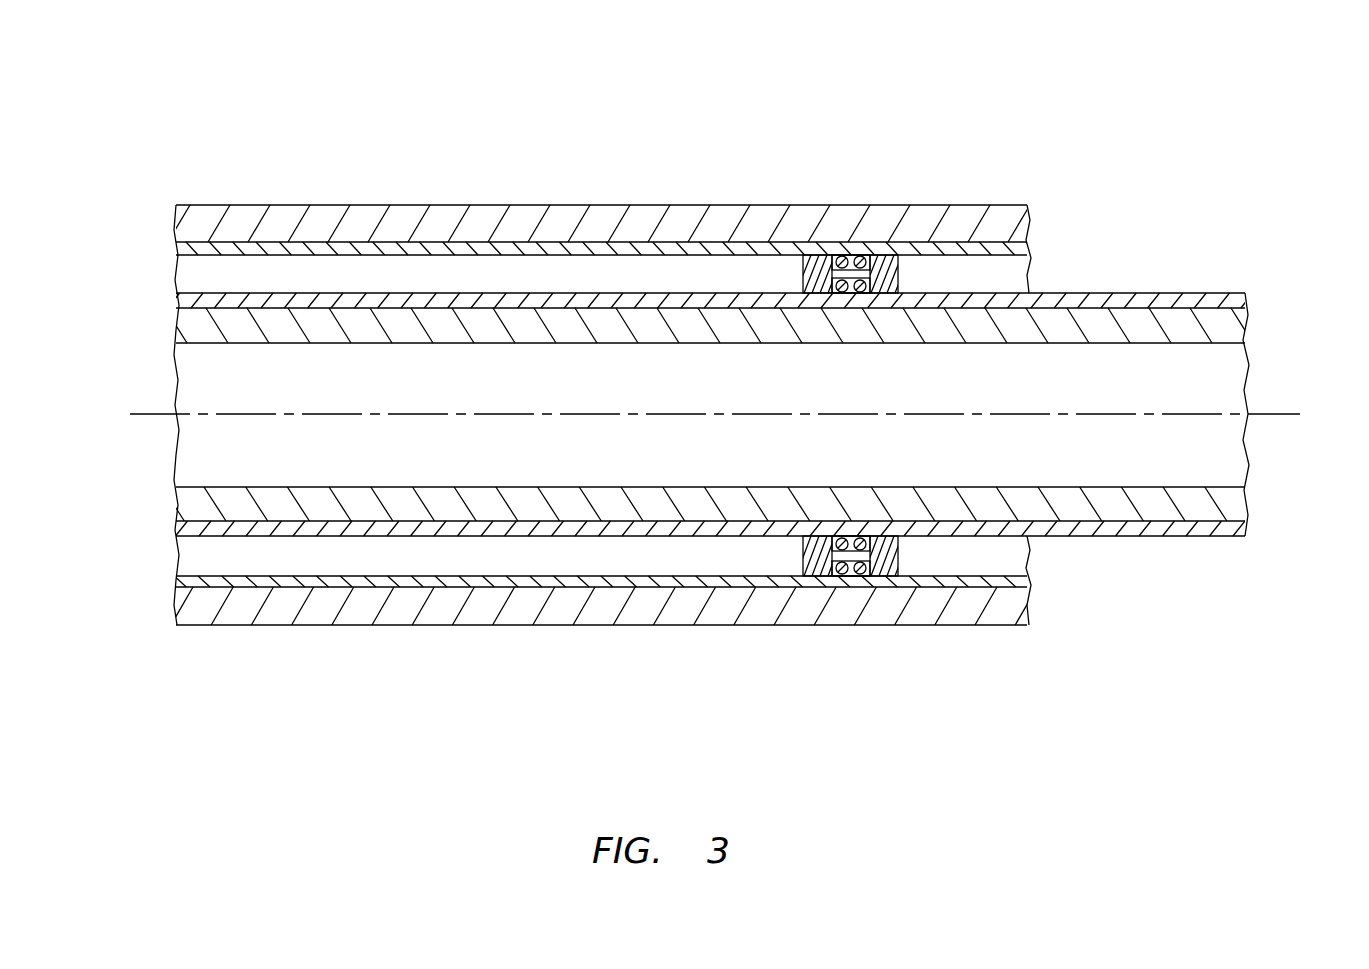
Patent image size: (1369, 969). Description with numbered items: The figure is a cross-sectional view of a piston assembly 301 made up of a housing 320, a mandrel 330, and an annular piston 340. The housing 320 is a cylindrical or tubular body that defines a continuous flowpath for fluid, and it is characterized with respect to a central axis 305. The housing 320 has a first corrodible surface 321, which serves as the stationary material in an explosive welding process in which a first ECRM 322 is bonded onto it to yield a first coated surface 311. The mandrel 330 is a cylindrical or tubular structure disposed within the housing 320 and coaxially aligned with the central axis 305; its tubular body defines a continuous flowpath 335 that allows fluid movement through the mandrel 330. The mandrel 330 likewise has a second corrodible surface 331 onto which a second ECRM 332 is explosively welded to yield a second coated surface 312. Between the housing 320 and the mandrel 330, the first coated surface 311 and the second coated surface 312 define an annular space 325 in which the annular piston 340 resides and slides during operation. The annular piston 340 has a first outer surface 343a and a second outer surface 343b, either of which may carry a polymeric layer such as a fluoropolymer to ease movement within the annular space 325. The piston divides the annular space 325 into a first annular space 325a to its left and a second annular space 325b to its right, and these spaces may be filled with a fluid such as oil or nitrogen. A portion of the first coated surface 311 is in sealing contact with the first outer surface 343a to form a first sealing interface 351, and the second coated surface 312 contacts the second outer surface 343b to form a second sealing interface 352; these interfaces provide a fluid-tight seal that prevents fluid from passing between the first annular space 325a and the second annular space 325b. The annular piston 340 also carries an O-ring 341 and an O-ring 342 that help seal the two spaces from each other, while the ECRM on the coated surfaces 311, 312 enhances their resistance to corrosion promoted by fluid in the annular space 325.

The piston assembly 301 is at (175, 79).
The central axis 305 is at (1297, 414).
The first coated surface 311 is at (305, 255).
The second coated surface 312 is at (188, 296).
The housing 320 is at (205, 205).
The first corrodible surface 321 is at (186, 233).
The first ECRM 322 is at (230, 246).
The annular space 325 is at (385, 268).
The first annular space 325a is at (508, 568).
The second annular space 325b is at (917, 563).
The mandrel 330 is at (1220, 293).
The second corrodible surface 331 is at (187, 310).
The second ECRM 332 is at (502, 297).
The continuous flowpath 335 is at (1233, 385).
The annular piston 340 is at (820, 296).
The O-ring 341 is at (842, 258).
The O-ring 342 is at (888, 280).
The first outer surface 343a is at (815, 270).
The second outer surface 343b is at (900, 293).
The first sealing interface 351 is at (857, 262).
The second sealing interface 352 is at (803, 297).